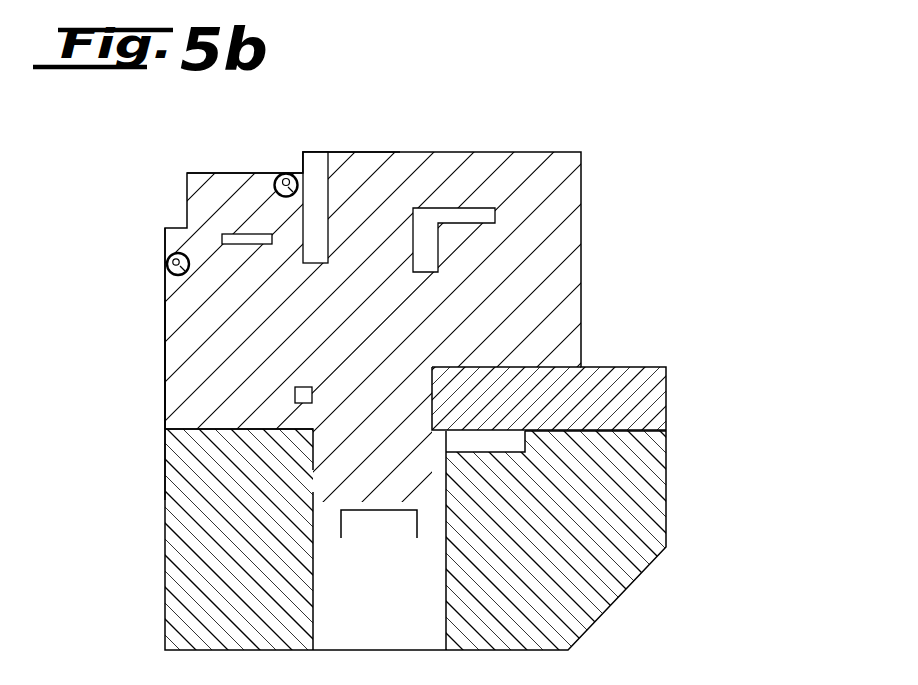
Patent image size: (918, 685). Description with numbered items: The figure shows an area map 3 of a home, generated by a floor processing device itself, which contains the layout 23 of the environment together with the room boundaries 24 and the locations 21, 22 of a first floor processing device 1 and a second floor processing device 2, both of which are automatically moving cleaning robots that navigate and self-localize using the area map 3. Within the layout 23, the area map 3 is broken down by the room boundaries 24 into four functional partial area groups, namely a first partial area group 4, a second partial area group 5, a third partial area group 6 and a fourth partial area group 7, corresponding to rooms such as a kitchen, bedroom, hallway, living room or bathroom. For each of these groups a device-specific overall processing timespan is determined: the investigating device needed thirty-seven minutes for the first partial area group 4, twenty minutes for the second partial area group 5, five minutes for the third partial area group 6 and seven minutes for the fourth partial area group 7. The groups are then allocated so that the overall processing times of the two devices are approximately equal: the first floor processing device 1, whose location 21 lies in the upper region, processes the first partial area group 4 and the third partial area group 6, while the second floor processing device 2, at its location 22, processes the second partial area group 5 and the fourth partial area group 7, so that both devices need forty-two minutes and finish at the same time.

The first floor processing device 1 is at (277, 182).
The second floor processing device 2 is at (168, 272).
The area map 3 is at (650, 151).
The first partial area group 4 is at (523, 243).
The second partial area group 5 is at (280, 463).
The third partial area group 6 is at (638, 402).
The fourth partial area group 7 is at (612, 500).
The location of the first floor processing device 21 is at (292, 166).
The location of the second floor processing device 22 is at (164, 246).
The layout 23 is at (165, 400).
The room boundaries 24 is at (600, 432).